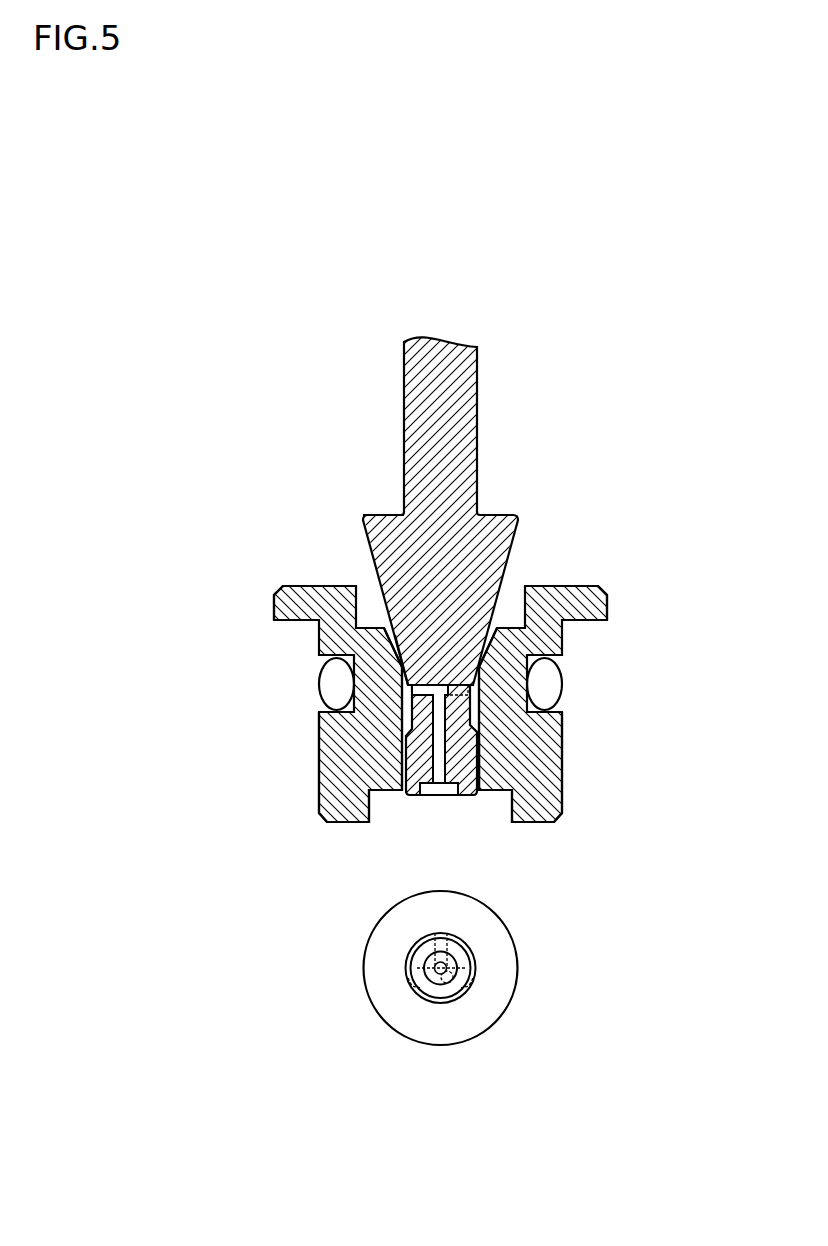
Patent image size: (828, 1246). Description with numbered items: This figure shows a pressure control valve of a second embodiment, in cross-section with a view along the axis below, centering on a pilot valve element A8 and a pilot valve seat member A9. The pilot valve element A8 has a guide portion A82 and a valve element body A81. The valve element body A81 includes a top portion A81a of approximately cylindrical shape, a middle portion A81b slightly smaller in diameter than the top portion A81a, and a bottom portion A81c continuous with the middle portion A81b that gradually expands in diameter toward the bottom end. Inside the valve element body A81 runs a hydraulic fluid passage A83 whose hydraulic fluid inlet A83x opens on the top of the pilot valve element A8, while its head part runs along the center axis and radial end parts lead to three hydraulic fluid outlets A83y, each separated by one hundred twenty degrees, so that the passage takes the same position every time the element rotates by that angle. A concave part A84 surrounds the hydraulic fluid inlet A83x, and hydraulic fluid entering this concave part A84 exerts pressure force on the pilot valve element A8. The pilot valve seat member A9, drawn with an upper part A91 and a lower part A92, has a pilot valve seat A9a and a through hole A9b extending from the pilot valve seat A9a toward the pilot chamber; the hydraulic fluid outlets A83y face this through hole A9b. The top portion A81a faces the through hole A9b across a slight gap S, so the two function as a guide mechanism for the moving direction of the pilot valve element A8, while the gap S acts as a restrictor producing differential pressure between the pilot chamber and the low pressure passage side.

The pilot valve element A8 is at (432, 735).
The guide portion A82 is at (458, 405).
The valve element body A81 is at (487, 533).
The top portion A81a is at (420, 757).
The middle portion A81b is at (403, 704).
The bottom portion A81c is at (362, 547).
The pilot valve seat member A9 is at (451, 693).
The upper flange portion A91 is at (598, 594).
The lower portion A92 is at (336, 790).
The pilot valve seat A9a is at (388, 650).
The through hole A9b is at (405, 722).
The hydraulic fluid passage A83 is at (442, 741).
The hydraulic fluid inlet A83x is at (450, 795).
The hydraulic fluid outlets A83y is at (468, 690).
The concave part A84 is at (428, 795).
The gap S is at (480, 762).